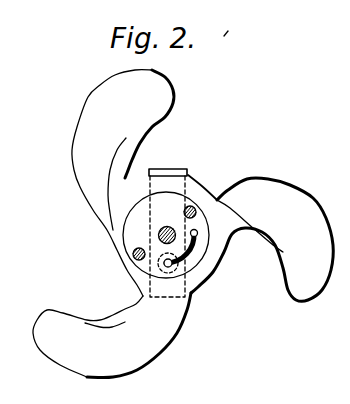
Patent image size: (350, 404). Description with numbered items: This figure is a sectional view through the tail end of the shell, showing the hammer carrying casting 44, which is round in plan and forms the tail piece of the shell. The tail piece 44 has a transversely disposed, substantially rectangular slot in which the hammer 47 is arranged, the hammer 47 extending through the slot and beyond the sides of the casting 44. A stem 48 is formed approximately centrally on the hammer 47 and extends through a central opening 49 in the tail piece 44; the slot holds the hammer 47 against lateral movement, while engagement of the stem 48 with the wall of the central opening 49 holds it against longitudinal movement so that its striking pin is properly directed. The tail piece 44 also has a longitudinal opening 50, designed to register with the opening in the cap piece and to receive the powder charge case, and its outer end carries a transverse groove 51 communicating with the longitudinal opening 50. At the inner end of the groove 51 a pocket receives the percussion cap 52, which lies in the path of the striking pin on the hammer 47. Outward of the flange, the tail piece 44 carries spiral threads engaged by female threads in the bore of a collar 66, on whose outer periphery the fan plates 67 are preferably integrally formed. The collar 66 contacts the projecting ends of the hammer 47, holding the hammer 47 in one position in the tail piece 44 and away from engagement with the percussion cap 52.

The hammer carrying casting 44 is at (133, 236).
The hammer 47 is at (184, 175).
The stem 48 is at (159, 239).
The central opening 49 is at (160, 229).
The longitudinal opening 50 is at (196, 231).
The transverse groove 51 is at (179, 260).
The percussion cap 52 is at (164, 266).
The collar 66 is at (154, 178).
The fan plates 67 is at (79, 134).